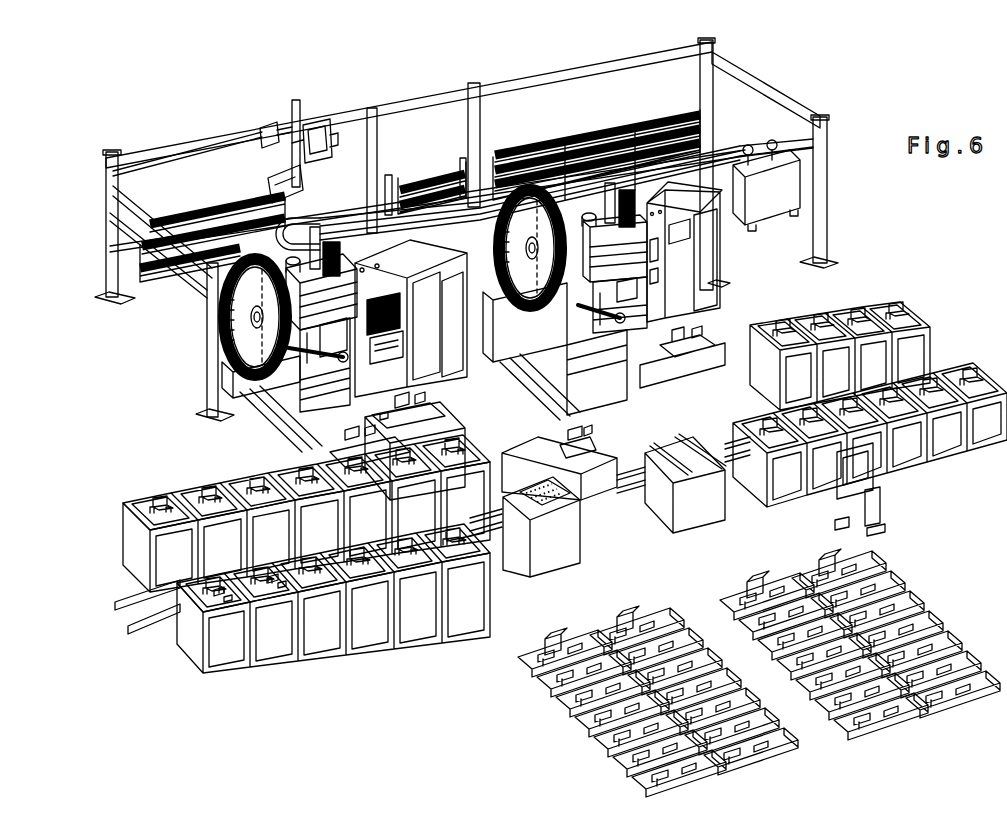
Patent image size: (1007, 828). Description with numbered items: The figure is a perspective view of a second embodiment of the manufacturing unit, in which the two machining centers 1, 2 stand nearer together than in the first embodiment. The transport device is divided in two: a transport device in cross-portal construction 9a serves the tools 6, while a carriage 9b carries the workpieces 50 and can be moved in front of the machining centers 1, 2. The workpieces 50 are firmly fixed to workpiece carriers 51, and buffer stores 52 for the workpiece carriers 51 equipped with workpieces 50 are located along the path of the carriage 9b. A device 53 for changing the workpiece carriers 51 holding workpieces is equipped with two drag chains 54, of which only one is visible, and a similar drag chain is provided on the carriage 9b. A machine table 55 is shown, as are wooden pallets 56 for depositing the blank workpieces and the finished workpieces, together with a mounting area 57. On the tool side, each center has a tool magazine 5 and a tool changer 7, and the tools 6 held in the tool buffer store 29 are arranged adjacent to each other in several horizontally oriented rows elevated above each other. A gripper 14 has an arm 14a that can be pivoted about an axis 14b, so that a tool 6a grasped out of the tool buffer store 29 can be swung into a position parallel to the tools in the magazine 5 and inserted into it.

The machining center 1 is at (243, 415).
The machining center 2 is at (735, 305).
The tool magazine 5 is at (240, 318).
The tools 6 is at (203, 217).
The tool 6a is at (288, 135).
The tool changer 7 is at (308, 348).
The transport device in cross-portal construction 9a is at (358, 103).
The carriage 9b is at (591, 484).
The gripper 14 is at (275, 188).
The arm 14a is at (276, 170).
The axis 14b is at (265, 186).
The tool buffer store 29 is at (230, 178).
The workpieces 50 is at (212, 492).
The workpiece carriers 51 is at (275, 579).
The buffer stores 52 is at (124, 580).
The device for changing the workpiece carriers 53 is at (461, 474).
The drag chains 54 is at (355, 447).
The machine table 55 is at (400, 394).
The wooden pallets 56 is at (567, 721).
The mounting area 57 is at (702, 518).